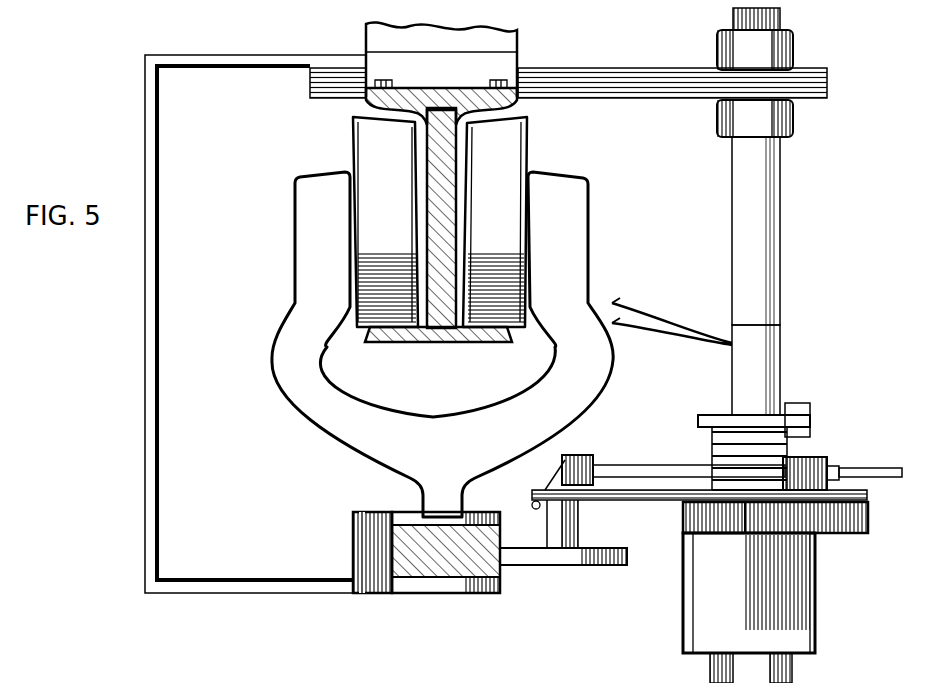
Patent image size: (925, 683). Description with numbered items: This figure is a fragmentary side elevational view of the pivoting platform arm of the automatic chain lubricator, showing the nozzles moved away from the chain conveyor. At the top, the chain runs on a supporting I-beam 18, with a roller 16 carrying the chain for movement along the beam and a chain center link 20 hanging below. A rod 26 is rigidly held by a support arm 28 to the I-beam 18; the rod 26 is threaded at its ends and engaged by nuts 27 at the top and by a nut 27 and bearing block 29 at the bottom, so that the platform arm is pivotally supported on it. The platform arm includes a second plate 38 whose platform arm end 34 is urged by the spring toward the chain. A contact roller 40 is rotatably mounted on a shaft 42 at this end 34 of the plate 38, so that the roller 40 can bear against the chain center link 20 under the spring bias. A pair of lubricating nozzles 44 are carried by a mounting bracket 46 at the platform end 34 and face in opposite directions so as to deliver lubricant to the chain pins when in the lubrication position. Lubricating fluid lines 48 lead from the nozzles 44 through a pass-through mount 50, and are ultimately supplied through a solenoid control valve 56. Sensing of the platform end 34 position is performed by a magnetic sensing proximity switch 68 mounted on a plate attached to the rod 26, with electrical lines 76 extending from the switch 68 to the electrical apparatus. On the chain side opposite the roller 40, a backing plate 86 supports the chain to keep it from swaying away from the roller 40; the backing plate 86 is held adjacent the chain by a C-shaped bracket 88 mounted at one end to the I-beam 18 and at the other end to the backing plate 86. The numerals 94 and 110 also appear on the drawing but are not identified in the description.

The roller 16 is at (360, 152).
The I-beam 18 is at (430, 336).
The chain center link 20 is at (408, 514).
The rod 26 is at (767, 192).
The nuts 27 is at (783, 120).
The support arm 28 is at (608, 68).
The bearing block 29 is at (798, 557).
The platform arm end 34 is at (535, 490).
The second plate 38 is at (668, 470).
The contact roller 40 is at (558, 566).
The shaft 42 is at (580, 516).
The lubricating nozzles 44 is at (550, 488).
The mounting bracket 46 is at (590, 458).
The lubricating fluid lines 48 is at (877, 468).
The pass-through mount 50 is at (815, 457).
The solenoid control valve 56 is at (470, 672).
The magnetic sensing proximity switch 68 is at (767, 360).
The electrical lines 76 is at (640, 318).
The backing plate 86 is at (370, 538).
The C-shaped bracket 88 is at (152, 343).
The element 94 is at (530, 672).
The element 110 is at (597, 672).